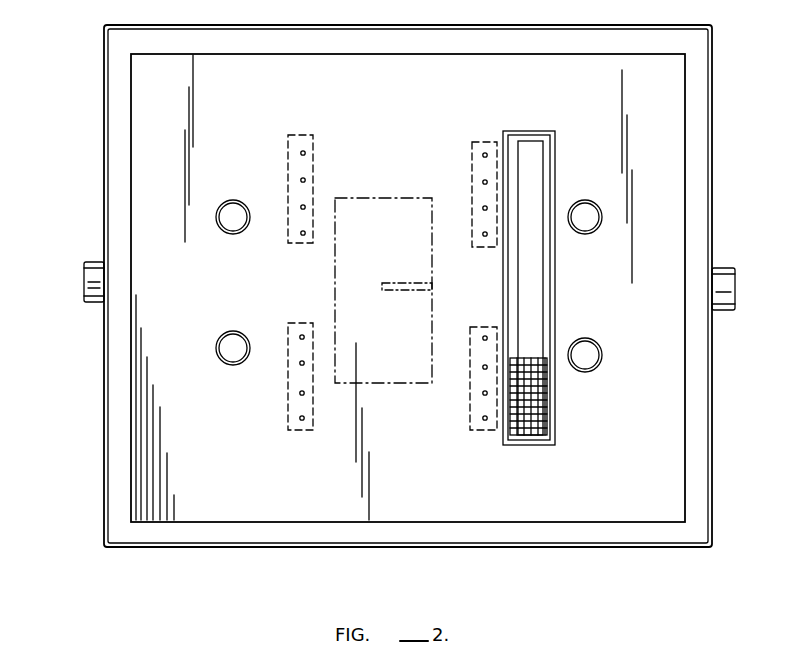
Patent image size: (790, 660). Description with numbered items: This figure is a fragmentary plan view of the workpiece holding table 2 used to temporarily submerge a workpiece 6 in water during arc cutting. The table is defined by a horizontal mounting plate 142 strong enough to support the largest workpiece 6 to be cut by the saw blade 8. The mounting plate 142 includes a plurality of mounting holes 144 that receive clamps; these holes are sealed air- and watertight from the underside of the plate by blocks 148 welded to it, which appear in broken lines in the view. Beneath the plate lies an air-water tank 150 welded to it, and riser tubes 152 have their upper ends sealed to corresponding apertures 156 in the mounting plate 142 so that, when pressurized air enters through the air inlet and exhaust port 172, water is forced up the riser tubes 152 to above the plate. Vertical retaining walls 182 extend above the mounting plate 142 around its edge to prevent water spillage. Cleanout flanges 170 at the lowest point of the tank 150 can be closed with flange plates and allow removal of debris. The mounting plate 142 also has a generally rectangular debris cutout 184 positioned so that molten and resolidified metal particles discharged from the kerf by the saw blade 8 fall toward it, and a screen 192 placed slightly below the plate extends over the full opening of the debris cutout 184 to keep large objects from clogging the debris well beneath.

The electrical apparatus 2 is at (58, 441).
The workpiece 6 is at (351, 198).
The saw blade 8 is at (388, 283).
The mounting plate 142 is at (131, 393).
The mounting holes 144 is at (300, 393).
The blocks 148 is at (291, 323).
The air-water tank 150 is at (713, 192).
The riser tubes 152 is at (230, 332).
The apertures 156 is at (234, 362).
The cleanout flanges 170 is at (729, 268).
The air inlet and exhaust port 172 is at (84, 276).
The vertical retaining walls 182 is at (117, 360).
The debris cutout 184 is at (533, 281).
The screen 192 is at (530, 370).